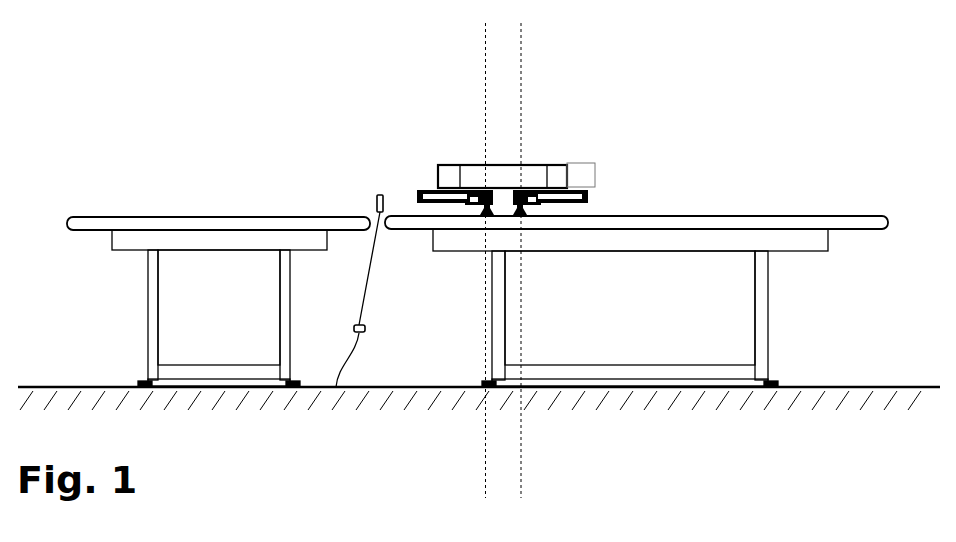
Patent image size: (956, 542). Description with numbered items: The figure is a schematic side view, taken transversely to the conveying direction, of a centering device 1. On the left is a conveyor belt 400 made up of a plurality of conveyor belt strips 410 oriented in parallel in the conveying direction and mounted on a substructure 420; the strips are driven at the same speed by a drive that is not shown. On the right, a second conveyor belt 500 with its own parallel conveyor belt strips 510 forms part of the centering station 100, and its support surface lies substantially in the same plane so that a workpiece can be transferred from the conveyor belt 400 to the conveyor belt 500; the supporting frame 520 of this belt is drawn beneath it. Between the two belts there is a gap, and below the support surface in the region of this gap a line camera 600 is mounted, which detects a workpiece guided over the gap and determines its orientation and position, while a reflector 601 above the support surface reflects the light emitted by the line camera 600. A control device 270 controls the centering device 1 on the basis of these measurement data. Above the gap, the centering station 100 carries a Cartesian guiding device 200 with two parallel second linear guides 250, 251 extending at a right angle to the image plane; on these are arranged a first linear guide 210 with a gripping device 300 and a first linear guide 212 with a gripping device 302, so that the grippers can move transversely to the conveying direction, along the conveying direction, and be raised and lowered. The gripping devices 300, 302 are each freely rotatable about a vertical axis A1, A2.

The centering device 1 is at (188, 74).
The centering station 100 is at (414, 106).
The Cartesian guiding device 200 is at (417, 168).
The first linear guide 210 is at (457, 165).
The first linear guide 212 is at (558, 165).
The second linear guide 250 is at (456, 165).
The second linear guide 251 is at (550, 165).
The control device 270 is at (588, 165).
The gripping device 300 is at (479, 224).
The gripping device 302 is at (518, 225).
The conveyor belt 400 is at (157, 190).
The conveyor belt strips 410 is at (292, 217).
The substructure 420 is at (248, 370).
The second conveyor belt 500 is at (751, 194).
The conveyor belt strips 510 is at (845, 217).
The second table frame 520 is at (742, 370).
The line camera 600 is at (336, 387).
The reflector 601 is at (377, 197).
The vertical axis A1 is at (486, 483).
The vertical axis A2 is at (521, 483).